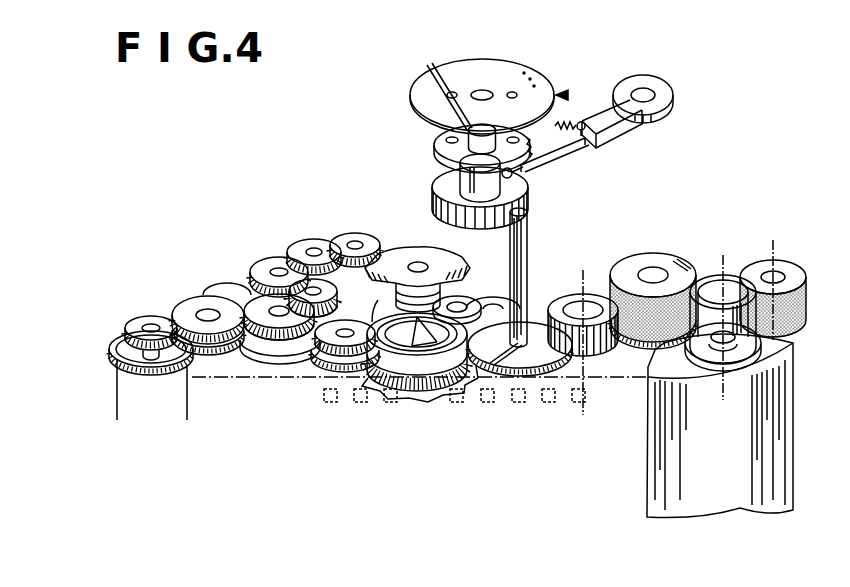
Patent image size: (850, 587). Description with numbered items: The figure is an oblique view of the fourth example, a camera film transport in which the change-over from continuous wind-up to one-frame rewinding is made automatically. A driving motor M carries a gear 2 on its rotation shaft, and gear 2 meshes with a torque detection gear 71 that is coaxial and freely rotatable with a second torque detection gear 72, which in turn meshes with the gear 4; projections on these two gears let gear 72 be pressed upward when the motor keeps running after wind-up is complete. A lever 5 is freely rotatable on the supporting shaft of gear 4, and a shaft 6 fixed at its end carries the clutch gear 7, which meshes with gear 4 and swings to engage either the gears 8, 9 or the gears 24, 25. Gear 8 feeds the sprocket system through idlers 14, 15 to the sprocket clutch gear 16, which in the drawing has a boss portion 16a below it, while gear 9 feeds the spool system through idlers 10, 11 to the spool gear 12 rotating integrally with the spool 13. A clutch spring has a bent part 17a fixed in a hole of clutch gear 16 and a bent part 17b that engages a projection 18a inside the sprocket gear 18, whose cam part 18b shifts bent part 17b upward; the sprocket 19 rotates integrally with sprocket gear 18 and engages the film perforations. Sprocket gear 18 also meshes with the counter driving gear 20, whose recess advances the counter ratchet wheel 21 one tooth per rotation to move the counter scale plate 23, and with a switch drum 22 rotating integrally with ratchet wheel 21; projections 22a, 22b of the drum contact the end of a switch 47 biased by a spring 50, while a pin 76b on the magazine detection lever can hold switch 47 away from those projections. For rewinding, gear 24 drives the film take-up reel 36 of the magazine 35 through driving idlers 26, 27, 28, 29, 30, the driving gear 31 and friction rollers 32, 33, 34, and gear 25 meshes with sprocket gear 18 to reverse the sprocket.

The gear 2 is at (150, 318).
The gear 4 is at (260, 340).
The lever 5 is at (275, 357).
The shaft 6 is at (309, 298).
The clutch gear 7 is at (328, 283).
The gear 8 is at (280, 260).
The gear 9 is at (258, 300).
The idler 10 is at (228, 288).
The idler 11 is at (195, 327).
The spool gear 12 is at (118, 343).
The spool 13 is at (140, 400).
The idler 14 is at (310, 240).
The idler 15 is at (348, 236).
The sprocket clutch gear 16 is at (429, 244).
The cam boss 16a is at (430, 263).
The bent part 17a is at (462, 265).
The bent part 17b is at (382, 262).
The sprocket gear 18 is at (420, 379).
The projection 18a is at (408, 372).
The cam part 18b is at (440, 398).
The sprocket 19 is at (458, 372).
The counter driving gear 20 is at (520, 329).
The counter ratchet wheel 21 is at (448, 192).
The switch drum 22 is at (495, 162).
The projection 22a is at (515, 177).
The projection 22b is at (560, 158).
The counter scale plate 23 is at (440, 80).
The gear 24 is at (330, 362).
The gear 25 is at (345, 356).
The driving idler 26 is at (380, 308).
The driving idler 27 is at (462, 300).
The driving idler 28 is at (488, 318).
The driving idler 29 is at (528, 282).
The driving idler 30 is at (576, 282).
The driving gear 31 is at (645, 335).
The friction roller 32 is at (650, 312).
The friction roller 33 is at (716, 372).
The friction roller 34 is at (775, 268).
The magazine 35 is at (790, 448).
The film take up reel 36 is at (723, 326).
The switch 47 is at (614, 107).
The spring 50 is at (566, 124).
The torque detection gear 71 is at (207, 350).
The torque detection gear 72 is at (205, 312).
The pin 76b is at (583, 122).
The driving motor M is at (133, 352).